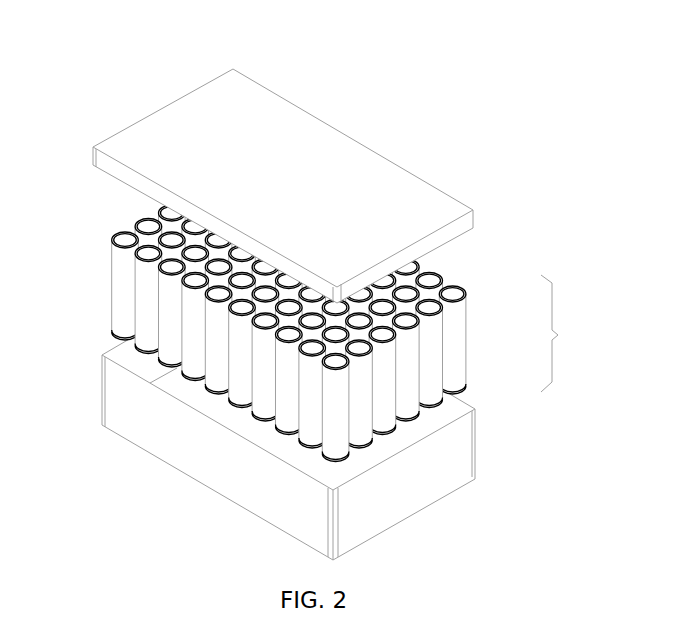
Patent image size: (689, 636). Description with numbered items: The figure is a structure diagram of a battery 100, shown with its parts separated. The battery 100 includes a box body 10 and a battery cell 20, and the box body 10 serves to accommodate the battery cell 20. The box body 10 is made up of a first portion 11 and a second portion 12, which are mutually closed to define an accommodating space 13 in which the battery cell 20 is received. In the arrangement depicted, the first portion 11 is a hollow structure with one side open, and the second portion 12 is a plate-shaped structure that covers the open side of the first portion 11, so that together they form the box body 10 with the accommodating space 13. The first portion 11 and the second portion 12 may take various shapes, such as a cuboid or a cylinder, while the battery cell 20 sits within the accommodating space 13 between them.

The battery 100 is at (296, 40).
The box body 10 is at (561, 333).
The first portion 11 is at (467, 435).
The second portion 12 is at (450, 228).
The accommodating space 13 is at (188, 385).
The battery cell 20 is at (118, 279).